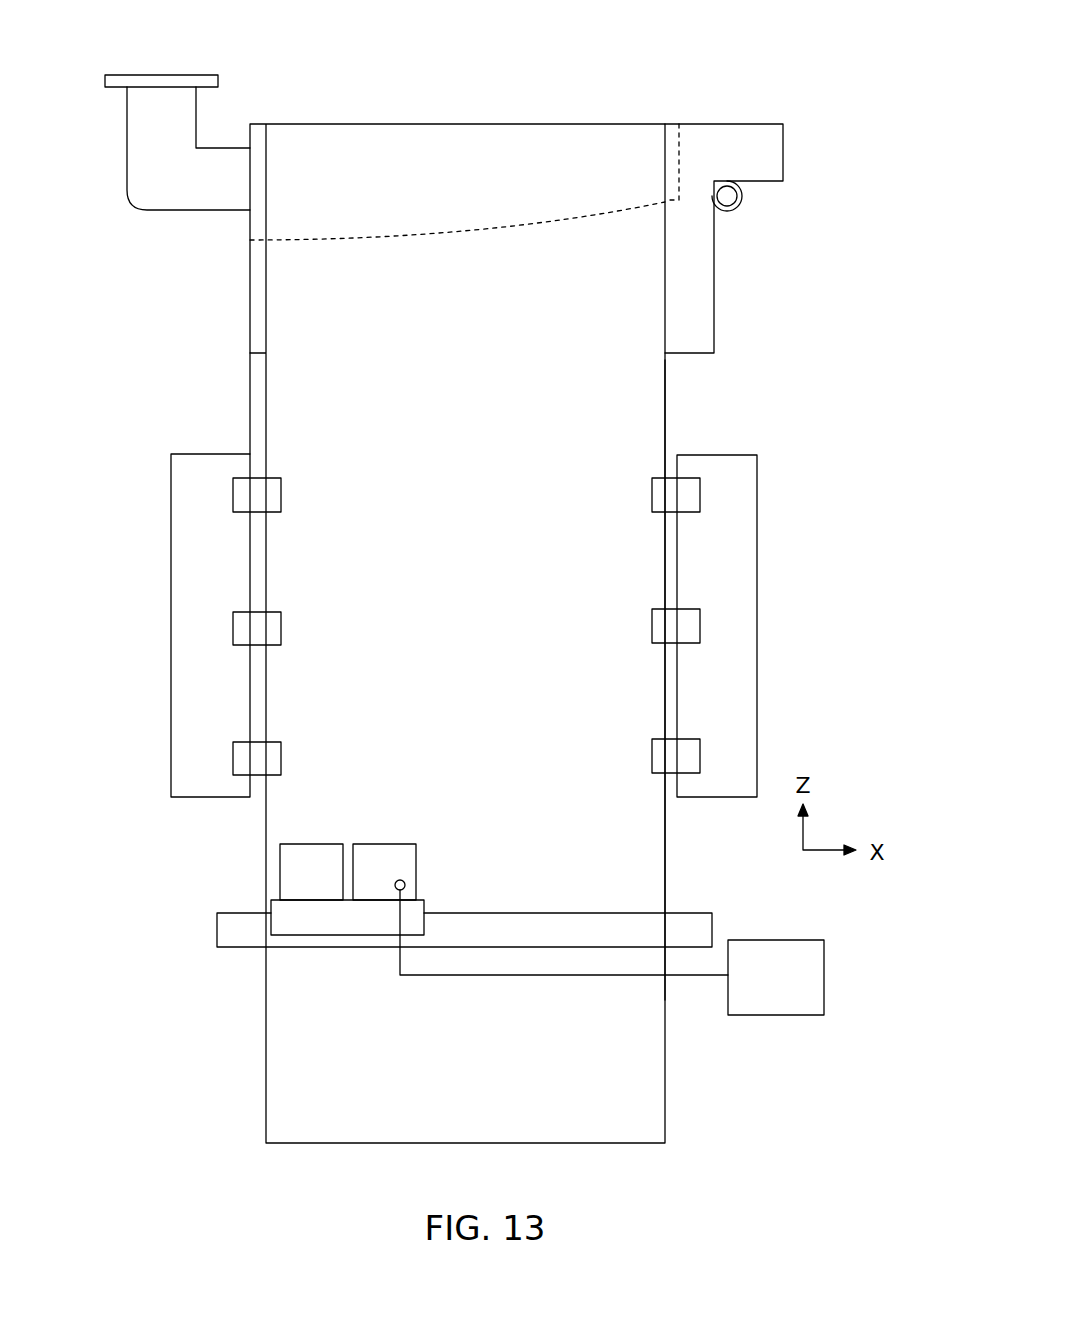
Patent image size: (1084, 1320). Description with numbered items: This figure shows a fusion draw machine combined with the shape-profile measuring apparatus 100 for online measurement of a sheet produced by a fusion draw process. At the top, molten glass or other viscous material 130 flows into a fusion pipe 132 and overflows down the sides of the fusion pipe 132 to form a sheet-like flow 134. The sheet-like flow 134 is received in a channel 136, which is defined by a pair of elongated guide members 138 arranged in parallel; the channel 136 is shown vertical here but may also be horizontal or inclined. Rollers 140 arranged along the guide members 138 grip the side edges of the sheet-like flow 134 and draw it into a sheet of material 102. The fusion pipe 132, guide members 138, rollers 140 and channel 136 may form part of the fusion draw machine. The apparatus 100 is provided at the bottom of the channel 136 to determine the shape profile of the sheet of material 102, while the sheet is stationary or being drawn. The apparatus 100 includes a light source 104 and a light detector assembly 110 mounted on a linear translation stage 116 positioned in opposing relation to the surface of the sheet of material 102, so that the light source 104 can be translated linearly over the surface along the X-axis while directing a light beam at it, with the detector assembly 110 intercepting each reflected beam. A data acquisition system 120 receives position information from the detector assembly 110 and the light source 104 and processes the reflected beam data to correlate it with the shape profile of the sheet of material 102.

The apparatus 100 is at (465, 633).
The sheet of material 102 is at (664, 1067).
The light source 104 is at (280, 882).
The light detector assembly 110 is at (382, 844).
The linear translation stage 116 is at (695, 912).
The data acquisition system 120 is at (775, 940).
The molten glass or other viscous material 130 is at (158, 70).
The fusion pipe 132 is at (707, 123).
The sheet-like flow 134 is at (667, 418).
The channel 136 is at (252, 466).
The guide members 138 is at (183, 454).
The rollers 140 is at (238, 758).